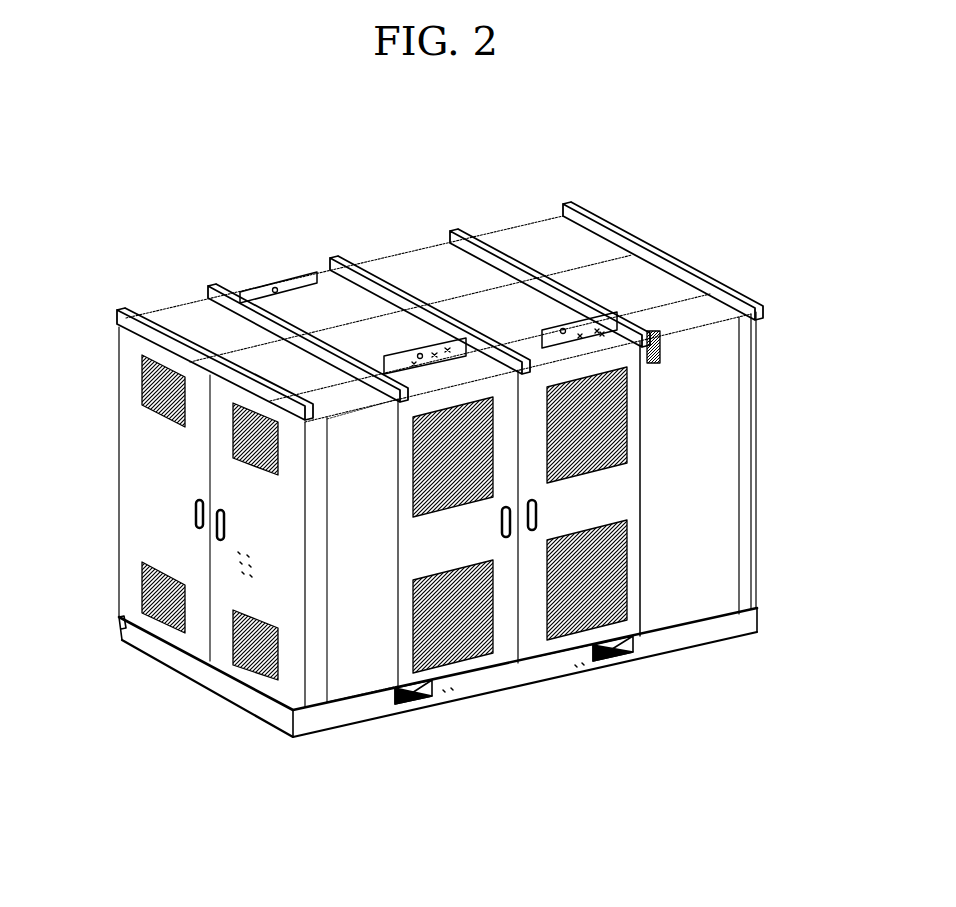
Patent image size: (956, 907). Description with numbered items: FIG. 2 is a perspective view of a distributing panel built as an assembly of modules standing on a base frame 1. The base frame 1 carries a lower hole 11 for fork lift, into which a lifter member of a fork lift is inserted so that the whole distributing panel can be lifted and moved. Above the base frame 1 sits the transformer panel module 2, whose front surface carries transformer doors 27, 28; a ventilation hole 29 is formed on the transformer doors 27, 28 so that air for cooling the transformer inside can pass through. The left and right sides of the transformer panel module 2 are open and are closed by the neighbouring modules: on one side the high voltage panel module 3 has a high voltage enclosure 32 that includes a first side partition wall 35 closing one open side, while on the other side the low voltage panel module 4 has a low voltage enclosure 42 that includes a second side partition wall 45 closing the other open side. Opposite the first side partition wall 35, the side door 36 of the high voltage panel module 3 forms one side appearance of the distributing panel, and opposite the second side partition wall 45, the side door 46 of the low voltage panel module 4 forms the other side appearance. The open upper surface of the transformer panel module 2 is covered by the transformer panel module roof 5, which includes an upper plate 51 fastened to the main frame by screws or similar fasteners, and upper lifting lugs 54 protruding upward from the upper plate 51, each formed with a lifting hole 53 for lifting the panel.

The base frame 1 is at (712, 632).
The transformer panel module 2 is at (627, 619).
The high voltage panel module 3 is at (111, 569).
The low voltage panel module 4 is at (674, 251).
The transformer panel module roof 5 is at (330, 290).
The lower hole for fork lift 11 is at (626, 652).
The transformer door 27 is at (535, 643).
The transformer door 28 is at (237, 284).
The ventilation hole 29 is at (566, 645).
The high voltage enclosure 32 is at (352, 653).
The first side partition wall 35 is at (393, 662).
The side door 36 is at (130, 514).
The low voltage enclosure 42 is at (720, 503).
The second side partition wall 45 is at (641, 574).
The side door 46 is at (757, 447).
The upper plate 51 is at (385, 265).
The lifting hole 53 is at (283, 272).
The upper lifting lug 54 is at (305, 285).